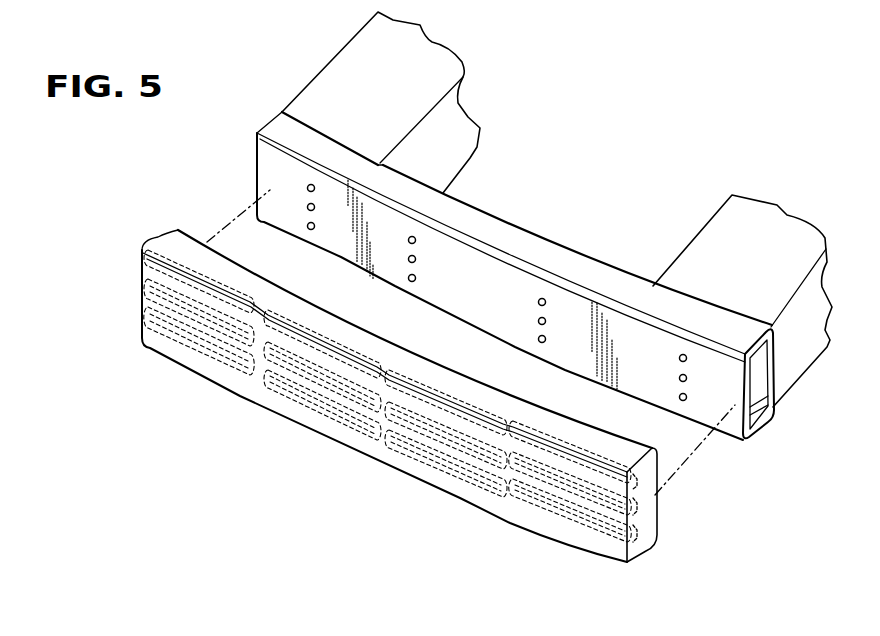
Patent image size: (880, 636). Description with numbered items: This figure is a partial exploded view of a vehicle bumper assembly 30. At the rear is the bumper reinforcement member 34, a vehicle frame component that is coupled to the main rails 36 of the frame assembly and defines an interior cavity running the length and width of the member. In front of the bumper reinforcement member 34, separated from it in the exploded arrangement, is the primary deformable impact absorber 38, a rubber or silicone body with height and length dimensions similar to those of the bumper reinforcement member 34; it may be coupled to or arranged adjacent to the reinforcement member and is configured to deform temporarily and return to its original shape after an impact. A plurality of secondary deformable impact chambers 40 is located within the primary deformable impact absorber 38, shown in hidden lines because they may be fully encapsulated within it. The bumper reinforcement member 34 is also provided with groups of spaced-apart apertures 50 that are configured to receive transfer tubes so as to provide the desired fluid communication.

The bumper assembly 30 is at (667, 98).
The bumper reinforcement member 34 is at (508, 231).
The main rails 36 is at (342, 82).
The primary deformable impact absorber 38 is at (140, 276).
The secondary deformable impact chambers 40 is at (205, 322).
The apertures 50 is at (308, 191).